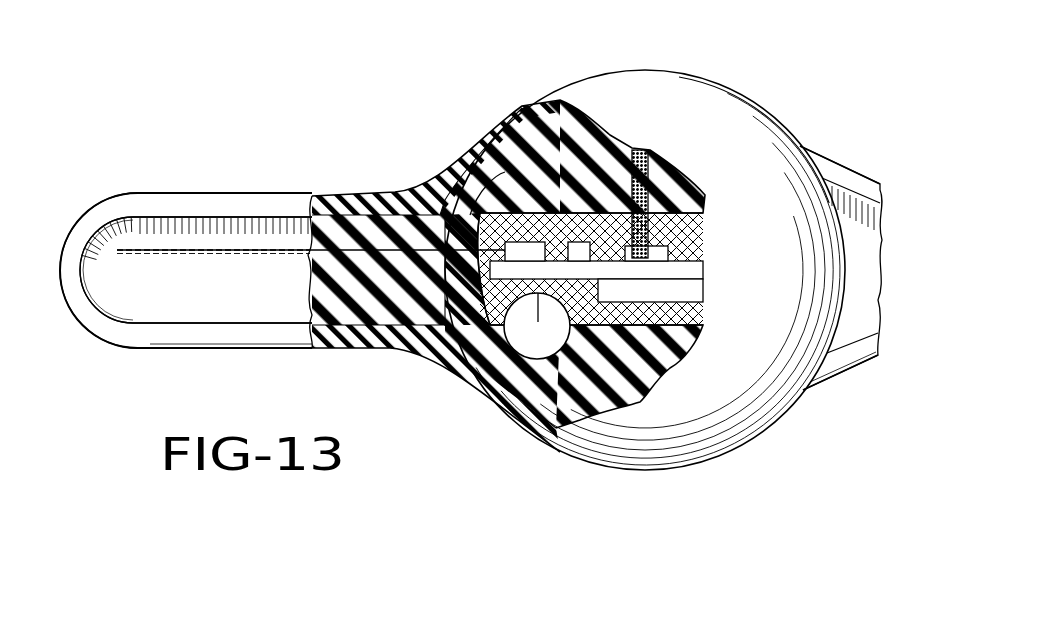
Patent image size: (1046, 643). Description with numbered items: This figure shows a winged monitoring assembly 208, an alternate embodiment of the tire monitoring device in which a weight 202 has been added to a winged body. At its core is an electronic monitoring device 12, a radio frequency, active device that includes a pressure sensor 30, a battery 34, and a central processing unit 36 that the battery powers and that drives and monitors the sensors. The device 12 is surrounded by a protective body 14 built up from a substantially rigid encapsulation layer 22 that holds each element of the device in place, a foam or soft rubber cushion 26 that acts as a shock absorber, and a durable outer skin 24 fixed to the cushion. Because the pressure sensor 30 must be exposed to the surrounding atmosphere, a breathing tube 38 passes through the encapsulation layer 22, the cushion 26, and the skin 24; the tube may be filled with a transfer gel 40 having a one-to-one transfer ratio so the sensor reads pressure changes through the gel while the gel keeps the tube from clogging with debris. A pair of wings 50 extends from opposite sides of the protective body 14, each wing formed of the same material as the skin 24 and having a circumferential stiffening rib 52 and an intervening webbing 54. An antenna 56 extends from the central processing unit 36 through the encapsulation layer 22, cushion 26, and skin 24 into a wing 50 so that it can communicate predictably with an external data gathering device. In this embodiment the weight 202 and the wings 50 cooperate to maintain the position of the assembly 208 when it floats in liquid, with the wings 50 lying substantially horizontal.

The electronic monitoring device 12 is at (705, 273).
The protective body 14 is at (703, 95).
The encapsulation layer 22 is at (705, 225).
The outer skin 24 is at (507, 127).
The cushion 26 is at (505, 172).
The pressure sensor 30 is at (650, 250).
The battery 34 is at (527, 330).
The central processing unit 36 is at (518, 252).
The breathing tube 38 is at (648, 152).
The transfer gel 40 is at (642, 70).
The wing 50 is at (187, 193).
The circumferential stiffening rib 52 is at (150, 337).
The intervening webbing 54 is at (220, 293).
The antenna 56 is at (350, 252).
The weight 202 is at (553, 415).
The winged monitoring assembly 208 is at (522, 96).